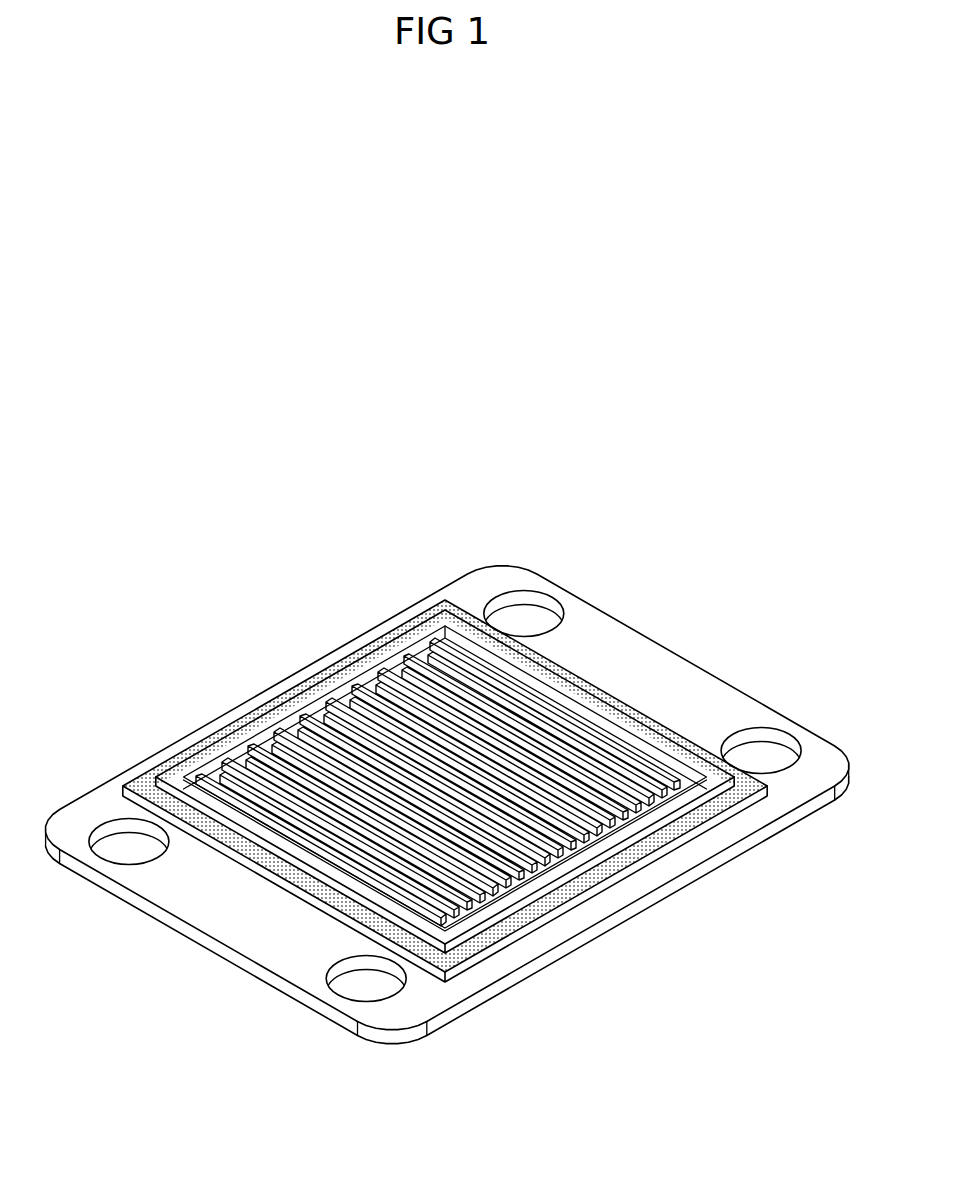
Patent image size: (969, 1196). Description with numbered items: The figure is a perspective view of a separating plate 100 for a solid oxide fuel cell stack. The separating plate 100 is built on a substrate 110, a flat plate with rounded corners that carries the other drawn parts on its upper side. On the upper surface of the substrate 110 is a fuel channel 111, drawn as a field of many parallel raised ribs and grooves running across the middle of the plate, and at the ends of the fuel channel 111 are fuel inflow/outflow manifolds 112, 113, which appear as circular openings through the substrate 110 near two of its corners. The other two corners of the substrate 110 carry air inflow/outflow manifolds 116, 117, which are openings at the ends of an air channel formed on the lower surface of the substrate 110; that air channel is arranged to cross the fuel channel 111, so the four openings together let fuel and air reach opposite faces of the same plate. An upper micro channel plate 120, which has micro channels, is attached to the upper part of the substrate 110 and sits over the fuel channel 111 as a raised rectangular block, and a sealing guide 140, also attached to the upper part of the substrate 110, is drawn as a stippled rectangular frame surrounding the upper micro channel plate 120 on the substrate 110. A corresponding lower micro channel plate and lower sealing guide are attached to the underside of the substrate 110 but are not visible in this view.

The separating plate 100 is at (292, 651).
The substrate 110 is at (645, 640).
The fuel channel 111 is at (404, 676).
The fuel inflow/outflow manifold 112 is at (101, 858).
The fuel inflow/outflow manifold 113 is at (784, 735).
The air inflow/outflow manifold 116 is at (338, 996).
The air inflow/outflow manifold 117 is at (550, 597).
The upper micro channel plate 120 is at (587, 872).
The sealing guide 140 is at (630, 862).